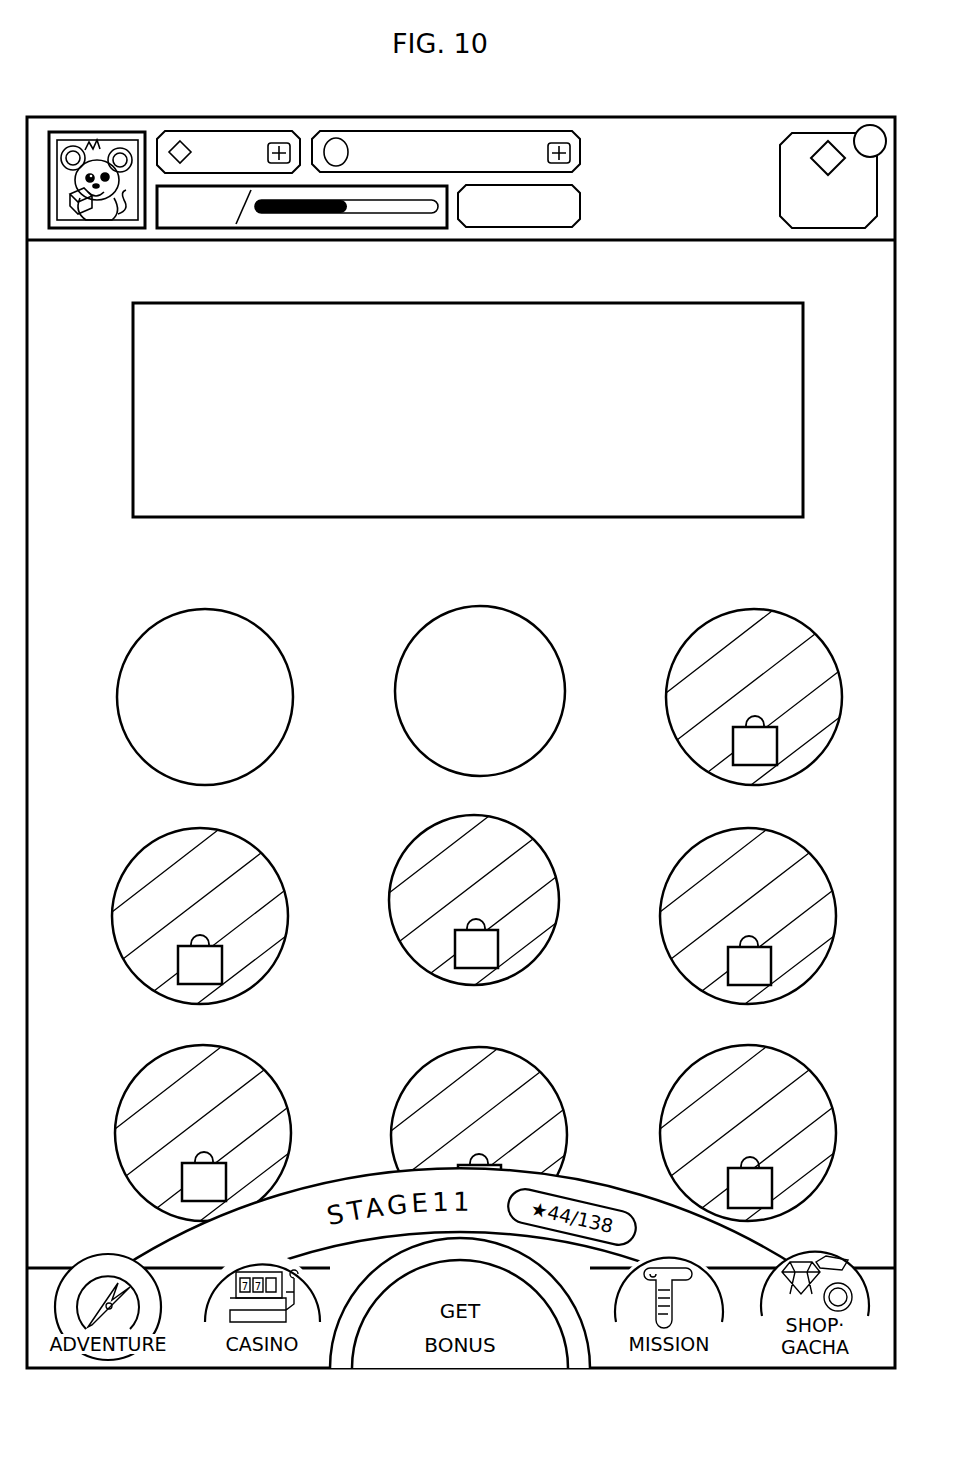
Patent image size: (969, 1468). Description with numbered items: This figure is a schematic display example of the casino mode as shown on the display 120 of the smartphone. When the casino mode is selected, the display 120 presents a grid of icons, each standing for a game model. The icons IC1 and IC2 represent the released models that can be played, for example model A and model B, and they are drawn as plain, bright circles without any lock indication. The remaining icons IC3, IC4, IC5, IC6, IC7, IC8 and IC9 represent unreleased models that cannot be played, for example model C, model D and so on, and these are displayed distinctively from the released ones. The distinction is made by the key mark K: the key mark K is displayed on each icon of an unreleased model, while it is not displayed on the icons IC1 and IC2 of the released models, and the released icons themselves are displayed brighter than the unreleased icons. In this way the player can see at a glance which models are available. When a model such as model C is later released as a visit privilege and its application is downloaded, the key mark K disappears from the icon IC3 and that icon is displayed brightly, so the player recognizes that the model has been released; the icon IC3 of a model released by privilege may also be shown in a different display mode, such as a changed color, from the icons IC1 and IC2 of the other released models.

The display 120 is at (572, 100).
The icon IC1 is at (255, 633).
The icon IC2 is at (497, 635).
The icon IC3 is at (771, 636).
The icon IC4 is at (225, 872).
The icon IC5 is at (482, 852).
The icon IC6 is at (755, 865).
The icon IC7 is at (225, 1092).
The icon IC8 is at (513, 1090).
The icon IC9 is at (770, 1088).
The key mark K is at (754, 750).